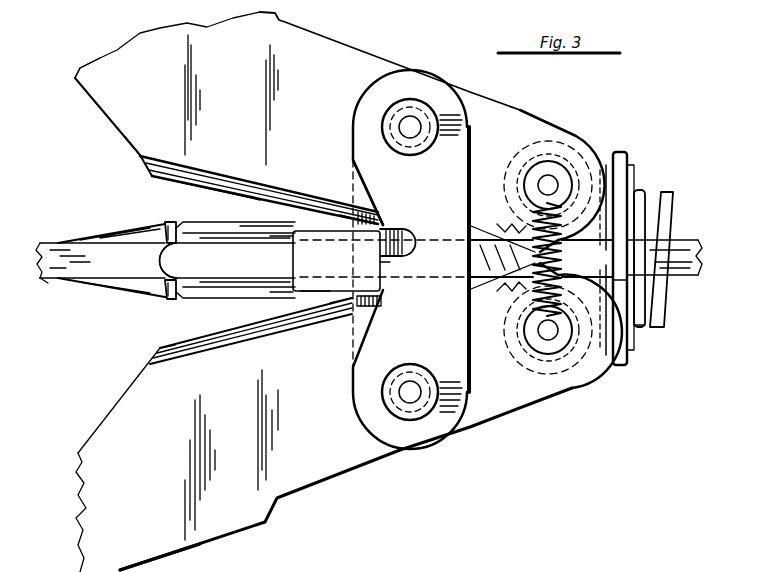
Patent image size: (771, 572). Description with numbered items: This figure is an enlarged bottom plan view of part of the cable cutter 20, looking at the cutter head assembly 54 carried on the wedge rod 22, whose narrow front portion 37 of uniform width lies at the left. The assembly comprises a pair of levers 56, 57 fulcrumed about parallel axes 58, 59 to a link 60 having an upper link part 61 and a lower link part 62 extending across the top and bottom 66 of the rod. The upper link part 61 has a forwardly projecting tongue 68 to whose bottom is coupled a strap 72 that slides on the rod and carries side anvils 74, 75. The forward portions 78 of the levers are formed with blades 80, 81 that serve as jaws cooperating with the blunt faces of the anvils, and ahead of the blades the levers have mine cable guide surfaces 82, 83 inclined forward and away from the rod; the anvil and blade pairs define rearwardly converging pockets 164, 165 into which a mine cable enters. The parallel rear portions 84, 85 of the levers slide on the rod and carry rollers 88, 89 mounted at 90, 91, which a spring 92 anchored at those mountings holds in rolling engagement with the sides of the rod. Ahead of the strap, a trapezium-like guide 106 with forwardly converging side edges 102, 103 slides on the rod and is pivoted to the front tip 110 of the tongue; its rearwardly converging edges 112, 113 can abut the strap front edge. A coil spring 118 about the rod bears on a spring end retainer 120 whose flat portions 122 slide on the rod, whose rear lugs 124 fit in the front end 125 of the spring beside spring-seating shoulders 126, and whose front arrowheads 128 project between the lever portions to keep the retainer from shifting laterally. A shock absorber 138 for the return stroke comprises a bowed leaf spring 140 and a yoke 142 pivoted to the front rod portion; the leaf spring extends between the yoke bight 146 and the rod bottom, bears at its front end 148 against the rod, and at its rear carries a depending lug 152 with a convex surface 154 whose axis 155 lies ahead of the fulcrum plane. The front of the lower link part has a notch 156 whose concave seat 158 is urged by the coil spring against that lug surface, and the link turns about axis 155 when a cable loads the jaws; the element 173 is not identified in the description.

The cable cutter 20 is at (374, 45).
The wedge rod 22 is at (43, 233).
The narrow front portion 37 is at (46, 283).
The cutter head assembly 54 is at (90, 112).
The lever 56 is at (165, 548).
The lever 57 is at (126, 58).
The fulcrum axis 58 is at (412, 392).
The fulcrum axis 59 is at (415, 135).
The link 60 is at (346, 135).
The upper link part 61 is at (350, 305).
The lower link part 62 is at (356, 380).
The bottom of the rod 66 is at (470, 256).
The tongue 68 is at (172, 222).
The strap 72 is at (236, 228).
The anvil 74 is at (246, 298).
The anvil 75 is at (270, 225).
The forward portions of the levers 78 is at (80, 70).
The blade 80 is at (197, 345).
The blade 81 is at (163, 183).
The mine cable guide surface 82 is at (117, 405).
The mine cable guide surface 83 is at (122, 138).
The rear portions of lever 56 84 is at (572, 392).
The rear portions of lever 57 85 is at (570, 128).
The roller 88 is at (512, 340).
The roller 89 is at (510, 178).
The roller mounting 90 is at (515, 352).
The roller mounting 91 is at (528, 160).
The spring 92 is at (510, 205).
The side edge of guide 102 is at (118, 296).
The side edge of guide 103 is at (85, 240).
The trapezium-like guide 106 is at (120, 216).
The front tip of the tongue 110 is at (170, 298).
The rearwardly converging side edge 112 is at (166, 297).
The rearwardly converging side edge 113 is at (166, 228).
The coil spring 118 is at (668, 196).
The spring end retainer 120 is at (636, 154).
The flat top and bottom portions of retainer 122 is at (617, 282).
The rear lugs 124 is at (645, 325).
The front end of the spring 125 is at (640, 192).
The spring-seating shoulders 126 is at (634, 175).
The front arrowheads 128 is at (573, 259).
The shock absorber 138 is at (285, 297).
The leaf spring 140 is at (285, 240).
The yoke 142 is at (333, 219).
The yoke bight 146 is at (313, 282).
The front end of leaf spring 148 is at (163, 258).
The depending lug 152 is at (390, 270).
The convex rear surface 154 is at (394, 258).
The lug surface axis 155 is at (352, 262).
The notch 156 is at (368, 195).
The concave seat 158 is at (385, 265).
The pocket 164 is at (154, 336).
The pocket 165 is at (205, 189).
The piston 173 is at (292, 258).